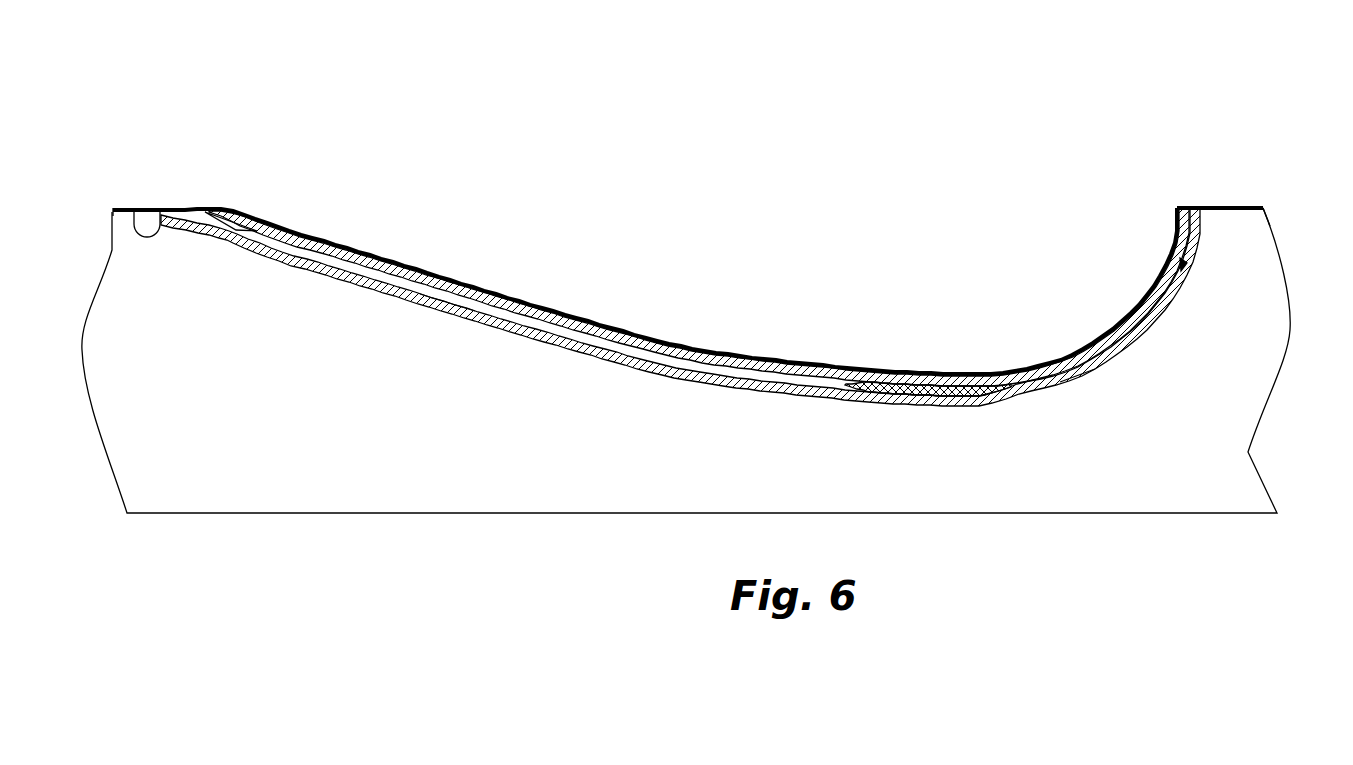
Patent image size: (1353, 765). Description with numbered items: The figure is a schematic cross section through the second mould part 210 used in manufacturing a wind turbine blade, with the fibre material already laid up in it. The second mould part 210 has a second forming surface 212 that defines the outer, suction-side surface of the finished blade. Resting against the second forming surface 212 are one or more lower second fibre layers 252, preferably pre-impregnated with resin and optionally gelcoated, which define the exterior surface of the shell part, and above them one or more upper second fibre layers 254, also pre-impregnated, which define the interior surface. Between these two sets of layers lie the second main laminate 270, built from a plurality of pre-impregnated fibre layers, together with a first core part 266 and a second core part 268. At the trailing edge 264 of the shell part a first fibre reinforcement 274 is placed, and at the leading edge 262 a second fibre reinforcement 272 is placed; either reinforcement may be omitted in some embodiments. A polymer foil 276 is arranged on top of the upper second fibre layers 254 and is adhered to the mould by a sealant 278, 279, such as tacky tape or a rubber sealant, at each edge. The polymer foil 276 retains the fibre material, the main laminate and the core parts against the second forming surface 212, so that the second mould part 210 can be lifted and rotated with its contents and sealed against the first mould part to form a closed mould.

The second mould part 210 is at (1124, 448).
The second forming surface 212 is at (447, 302).
The lower second fibre layers 252 is at (670, 366).
The upper second fibre layers 254 is at (742, 350).
The leading edge 262 is at (1207, 230).
The trailing edge 264 is at (135, 210).
The first core part 266 is at (1078, 373).
The second core part 268 is at (577, 336).
The second main laminate 270 is at (935, 396).
The second fibre reinforcement 272 is at (1190, 230).
The first fibre reinforcement 274 is at (215, 213).
The polymer foil 276 is at (870, 368).
The sealant 278 is at (1265, 212).
The sealant 279 is at (113, 208).